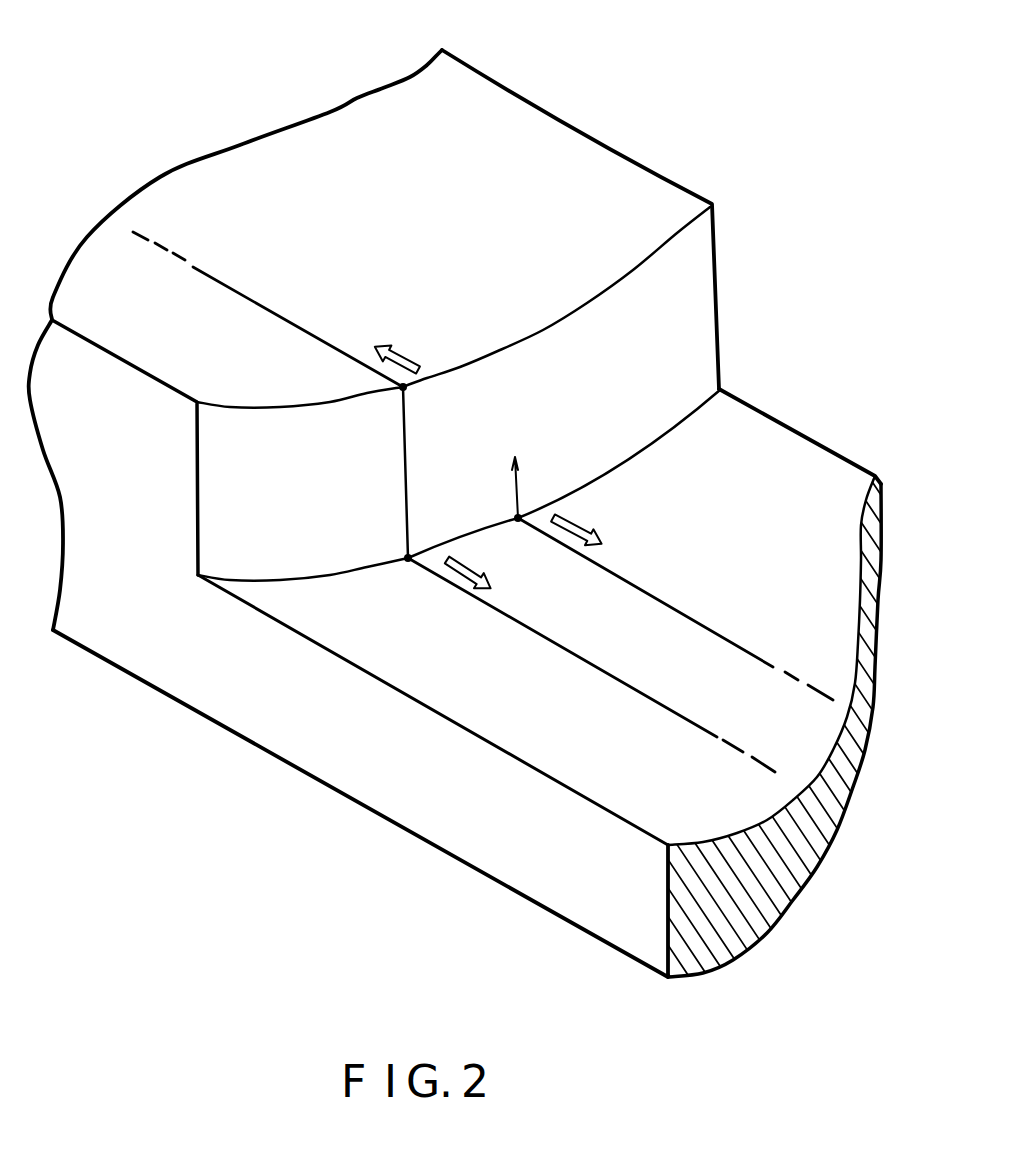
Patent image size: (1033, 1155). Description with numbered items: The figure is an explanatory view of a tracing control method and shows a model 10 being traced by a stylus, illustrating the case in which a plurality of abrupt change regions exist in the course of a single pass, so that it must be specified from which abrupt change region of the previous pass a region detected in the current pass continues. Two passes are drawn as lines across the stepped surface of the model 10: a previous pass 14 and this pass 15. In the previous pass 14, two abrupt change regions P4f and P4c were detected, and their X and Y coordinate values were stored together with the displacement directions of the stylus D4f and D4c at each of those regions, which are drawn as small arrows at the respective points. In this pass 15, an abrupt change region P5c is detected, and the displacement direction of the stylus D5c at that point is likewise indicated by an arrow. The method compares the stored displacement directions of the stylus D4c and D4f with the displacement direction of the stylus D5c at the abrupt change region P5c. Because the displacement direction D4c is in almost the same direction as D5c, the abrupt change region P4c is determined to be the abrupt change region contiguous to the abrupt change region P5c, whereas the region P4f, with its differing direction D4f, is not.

The model 10 is at (605, 178).
The previous pass 14 is at (610, 678).
The this pass 15 is at (727, 637).
The abrupt change region P4f is at (400, 393).
The abrupt change region P4c is at (407, 567).
The abrupt change region P5c is at (522, 512).
The displacement direction of the stylus D4f is at (405, 360).
The displacement direction of the stylus D4c is at (490, 587).
The displacement direction of the stylus D5c is at (603, 537).